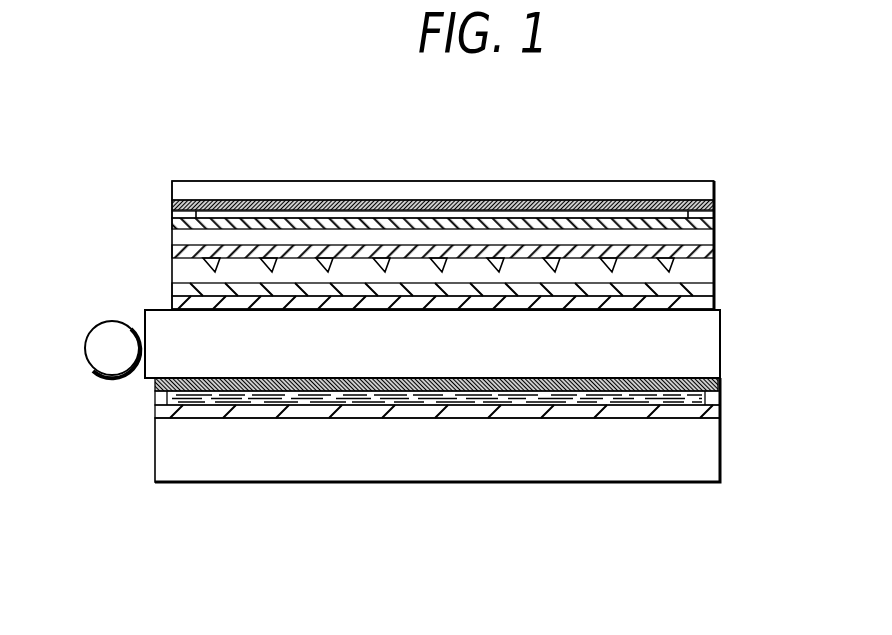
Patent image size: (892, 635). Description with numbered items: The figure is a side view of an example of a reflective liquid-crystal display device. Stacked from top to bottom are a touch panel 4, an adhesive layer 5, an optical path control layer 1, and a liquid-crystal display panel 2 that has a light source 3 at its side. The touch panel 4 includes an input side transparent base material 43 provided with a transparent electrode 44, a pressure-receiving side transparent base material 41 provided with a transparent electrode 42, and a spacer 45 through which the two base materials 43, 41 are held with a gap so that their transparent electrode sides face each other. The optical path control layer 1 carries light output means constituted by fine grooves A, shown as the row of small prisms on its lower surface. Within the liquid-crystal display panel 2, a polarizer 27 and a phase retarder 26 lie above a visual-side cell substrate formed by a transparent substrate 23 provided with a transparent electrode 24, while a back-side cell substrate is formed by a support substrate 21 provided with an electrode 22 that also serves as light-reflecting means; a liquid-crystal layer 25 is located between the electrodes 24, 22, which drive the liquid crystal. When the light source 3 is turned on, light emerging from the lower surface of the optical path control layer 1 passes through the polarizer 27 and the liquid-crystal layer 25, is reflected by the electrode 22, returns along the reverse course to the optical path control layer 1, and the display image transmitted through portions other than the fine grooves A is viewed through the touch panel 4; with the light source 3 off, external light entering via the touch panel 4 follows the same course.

The optical path control layer 1 is at (715, 273).
The liquid-crystal display panel 2 is at (487, 382).
The light source 3 is at (103, 347).
The touch panel 4 is at (499, 191).
The adhesive layer 5 is at (715, 253).
The support substrate 21 is at (470, 430).
The electrode 22 is at (718, 413).
The transparent substrate 23 is at (710, 352).
The transparent electrode 24 is at (718, 380).
The liquid-crystal layer 25 is at (718, 398).
The phase retarder 26 is at (718, 308).
The polarizer 27 is at (715, 293).
The pressure-receiving side transparent base material 41 is at (478, 245).
The transparent electrode 42 is at (715, 223).
The input side transparent base material 43 is at (715, 184).
The transparent electrode 44 is at (715, 203).
The spacer 45 is at (690, 211).
The fine grooves A is at (207, 266).